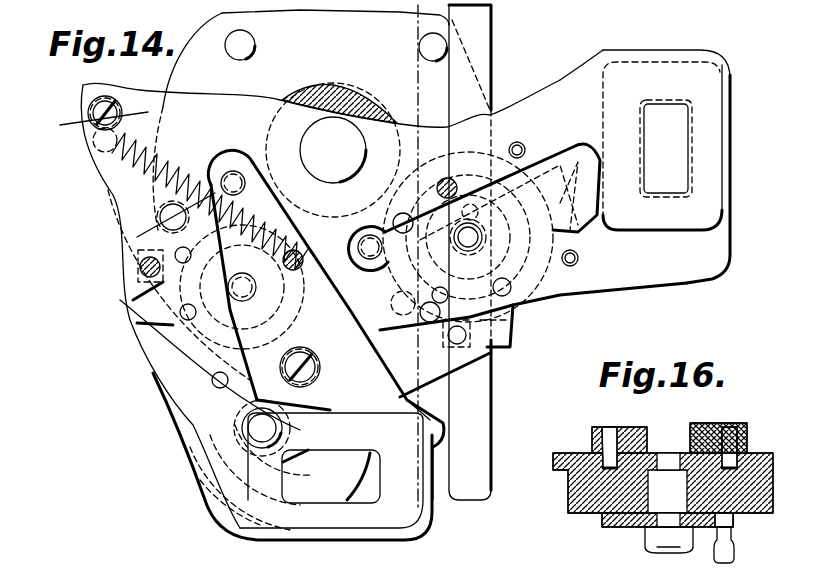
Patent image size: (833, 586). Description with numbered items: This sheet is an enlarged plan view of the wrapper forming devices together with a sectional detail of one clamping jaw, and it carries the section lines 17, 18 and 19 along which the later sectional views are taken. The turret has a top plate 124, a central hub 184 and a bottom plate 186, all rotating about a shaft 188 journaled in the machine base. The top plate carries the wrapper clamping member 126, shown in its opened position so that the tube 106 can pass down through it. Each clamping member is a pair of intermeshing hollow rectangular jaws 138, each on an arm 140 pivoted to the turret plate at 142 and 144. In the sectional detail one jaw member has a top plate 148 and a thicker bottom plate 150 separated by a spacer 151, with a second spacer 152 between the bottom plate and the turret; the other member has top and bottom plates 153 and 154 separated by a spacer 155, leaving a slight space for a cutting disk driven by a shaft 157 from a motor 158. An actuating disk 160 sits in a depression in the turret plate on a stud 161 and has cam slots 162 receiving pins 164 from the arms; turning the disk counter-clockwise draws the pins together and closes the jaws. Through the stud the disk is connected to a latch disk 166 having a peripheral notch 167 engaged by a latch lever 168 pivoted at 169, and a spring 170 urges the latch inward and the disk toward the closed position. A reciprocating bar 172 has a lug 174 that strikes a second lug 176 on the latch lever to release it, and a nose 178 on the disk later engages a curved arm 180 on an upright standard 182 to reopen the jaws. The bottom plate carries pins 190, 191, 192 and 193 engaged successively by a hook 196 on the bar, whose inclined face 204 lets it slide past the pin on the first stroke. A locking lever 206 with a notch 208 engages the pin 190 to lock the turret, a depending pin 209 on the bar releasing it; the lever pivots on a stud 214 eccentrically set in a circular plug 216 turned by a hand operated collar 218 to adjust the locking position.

In FIG. 14, the section line 17- 17 is at (434, 26).
In FIG. 14, the section line 18- 18 is at (148, 112).
In FIG. 14, the section line 19- 19 is at (137, 237).
In FIG. 14, the tube 106 is at (693, 165).
In FIG. 14, the top plate 124 is at (103, 227).
In FIG. 16, the top plate 124 is at (748, 510).
In FIG. 14, the wrapper clamping member 126 is at (739, 61).
In FIG. 14, the hollow rectangular jaw 138 is at (728, 112).
In FIG. 14, the arm 140 is at (517, 133).
In FIG. 14, the pivot 142 is at (87, 270).
In FIG. 14, the pivot 144 is at (235, 172).
In FIG. 16, the top plate 148 is at (747, 428).
In FIG. 16, the bottom plate 150 is at (747, 440).
In FIG. 16, the spacer 151 is at (705, 425).
In FIG. 14, the second spacer 152 is at (337, 558).
In FIG. 16, the second spacer 152 is at (747, 450).
In FIG. 16, the top plate 153 is at (600, 427).
In FIG. 16, the bottom plate 154 is at (600, 455).
In FIG. 16, the spacer 155 is at (592, 432).
In FIG. 14, the shaft 157 is at (379, 578).
In FIG. 14, the motor 158 is at (357, 527).
In FIG. 14, the actuating disk 160 is at (533, 183).
In FIG. 16, the actuating disk 160 is at (685, 452).
In FIG. 14, the stud 161 is at (478, 212).
In FIG. 16, the stud 161 is at (663, 490).
In FIG. 14, the cam slot 162 is at (510, 147).
In FIG. 14, the pin 164 is at (445, 178).
In FIG. 16, the pin 164 is at (608, 440).
In FIG. 14, the latch disk 166 is at (580, 256).
In FIG. 16, the latch disk 166 is at (705, 530).
In FIG. 14, the peripheral notch 167 is at (505, 278).
In FIG. 14, the latch lever 168 is at (445, 372).
In FIG. 14, the pivot 169 is at (95, 102).
In FIG. 14, the spring 170 is at (239, 211).
In FIG. 14, the reciprocating bar 172 is at (492, 48).
In FIG. 14, the lug 174 is at (500, 348).
In FIG. 14, the second lug 176 is at (493, 352).
In FIG. 14, the nose 178 is at (515, 345).
In FIG. 14, the curved arm 180 is at (140, 352).
In FIG. 14, the upright standard 182 is at (437, 425).
In FIG. 14, the central hub 184 is at (342, 86).
In FIG. 14, the bottom plate 186 is at (218, 20).
In FIG. 14, the shaft 188 is at (350, 130).
In FIG. 14, the pin 190 is at (363, 240).
In FIG. 14, the pin 191 is at (419, 47).
In FIG. 14, the pin 192 is at (253, 42).
In FIG. 14, the pin 193 is at (318, 212).
In FIG. 14, the hook 196 is at (484, 237).
In FIG. 14, the inclined face 204 is at (405, 398).
In FIG. 14, the locking lever 206 is at (440, 418).
In FIG. 14, the notch 208 is at (535, 292).
In FIG. 14, the depending pin 209 is at (585, 216).
In FIG. 14, the stud 214 is at (240, 425).
In FIG. 14, the circular plug 216 is at (203, 448).
In FIG. 14, the hand operated collar 218 is at (203, 477).